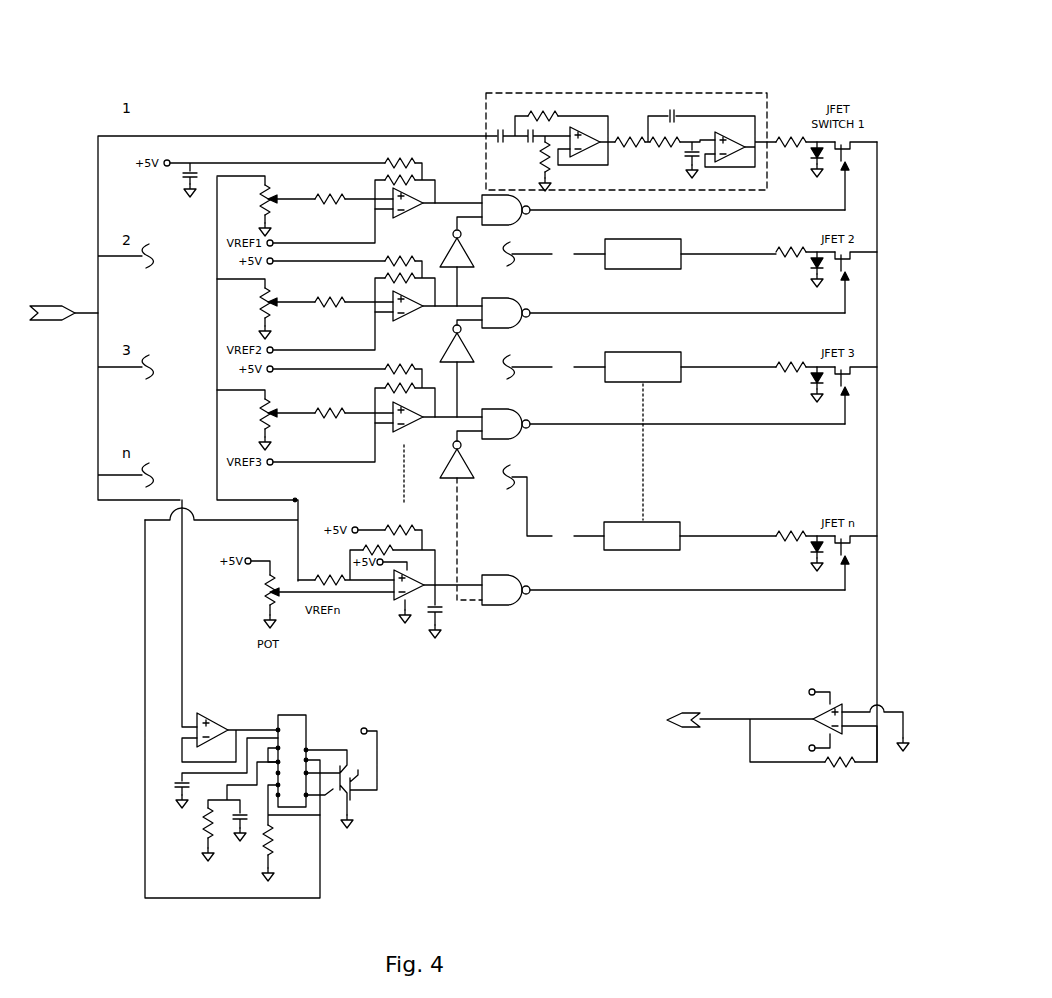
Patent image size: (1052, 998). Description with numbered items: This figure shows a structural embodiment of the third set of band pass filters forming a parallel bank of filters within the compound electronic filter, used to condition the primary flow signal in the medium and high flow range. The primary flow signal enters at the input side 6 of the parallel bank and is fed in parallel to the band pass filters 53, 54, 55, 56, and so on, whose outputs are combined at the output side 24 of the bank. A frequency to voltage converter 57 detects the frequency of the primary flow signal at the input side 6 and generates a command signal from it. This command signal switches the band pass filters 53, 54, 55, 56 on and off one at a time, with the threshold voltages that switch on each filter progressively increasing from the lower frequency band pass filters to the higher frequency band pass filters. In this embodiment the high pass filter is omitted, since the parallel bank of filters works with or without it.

The input side of the parallel bank of filters 6 is at (82, 320).
The output side of the parallel bank of filters 24 is at (723, 721).
The band pass filter 53 is at (722, 93).
The band pass filter 54 is at (681, 266).
The band pass filter 55 is at (681, 379).
The band pass filter 56 is at (680, 548).
The frequency to voltage converter 57 is at (358, 806).